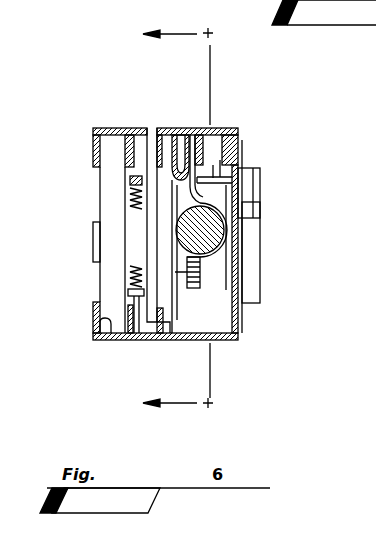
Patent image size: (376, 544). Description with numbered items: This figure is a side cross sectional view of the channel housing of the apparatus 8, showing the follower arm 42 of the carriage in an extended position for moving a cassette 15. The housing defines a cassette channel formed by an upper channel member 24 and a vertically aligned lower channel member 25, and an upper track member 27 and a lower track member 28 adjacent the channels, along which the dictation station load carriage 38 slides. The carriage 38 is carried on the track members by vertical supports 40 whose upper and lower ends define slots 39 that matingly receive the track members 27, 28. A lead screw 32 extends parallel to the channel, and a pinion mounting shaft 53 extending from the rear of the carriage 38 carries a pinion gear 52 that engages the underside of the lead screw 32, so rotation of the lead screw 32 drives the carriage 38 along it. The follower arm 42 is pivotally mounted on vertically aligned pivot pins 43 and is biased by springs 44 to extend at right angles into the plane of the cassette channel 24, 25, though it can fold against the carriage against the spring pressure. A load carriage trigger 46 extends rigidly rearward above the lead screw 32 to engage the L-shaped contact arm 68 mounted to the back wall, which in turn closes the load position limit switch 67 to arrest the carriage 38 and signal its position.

The apparatus 8 is at (166, 225).
The upright cassette 15 is at (115, 268).
The upper channel member 24 is at (115, 136).
The lower channel member 25 is at (98, 321).
The upper track member 27 is at (165, 177).
The lower track member 28 is at (173, 334).
The lead screw 32 is at (213, 238).
The dictation station load carriage 38 is at (125, 228).
The slot 39 is at (187, 176).
The vertical support 40 is at (150, 157).
The follower arm 42 is at (95, 240).
The pivot pin 43 is at (130, 178).
The spring 44 is at (130, 207).
The load carriage trigger 46 is at (192, 176).
The pinion gear 52 is at (198, 292).
The pinion mounting shaft 53 is at (180, 282).
The load position limit switch 67 is at (262, 205).
The contact arm 68 is at (213, 178).